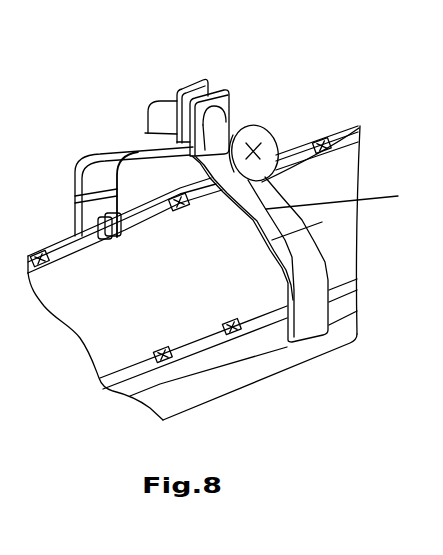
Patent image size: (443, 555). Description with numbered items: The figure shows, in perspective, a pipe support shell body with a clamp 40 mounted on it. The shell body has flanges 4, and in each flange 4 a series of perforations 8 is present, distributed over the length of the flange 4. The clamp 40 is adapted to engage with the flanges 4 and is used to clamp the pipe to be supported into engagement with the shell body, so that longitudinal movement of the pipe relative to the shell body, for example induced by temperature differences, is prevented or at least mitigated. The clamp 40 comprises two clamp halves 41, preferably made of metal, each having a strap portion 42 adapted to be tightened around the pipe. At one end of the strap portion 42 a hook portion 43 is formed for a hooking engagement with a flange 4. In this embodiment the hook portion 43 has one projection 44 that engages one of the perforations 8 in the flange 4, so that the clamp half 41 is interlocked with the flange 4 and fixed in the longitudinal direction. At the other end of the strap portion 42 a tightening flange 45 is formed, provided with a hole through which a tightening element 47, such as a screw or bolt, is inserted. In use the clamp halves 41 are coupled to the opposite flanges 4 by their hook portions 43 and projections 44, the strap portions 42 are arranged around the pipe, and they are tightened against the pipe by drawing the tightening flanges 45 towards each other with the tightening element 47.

The flange 4 is at (360, 127).
The perforations 8 is at (40, 258).
The clamp 40 is at (123, 125).
The clamp half 41 is at (143, 143).
The strap portion 42 is at (127, 160).
The hook portion 43 is at (289, 360).
The projection 44 is at (117, 232).
The tightening flange 45 is at (205, 92).
The tightening element 47 is at (223, 138).